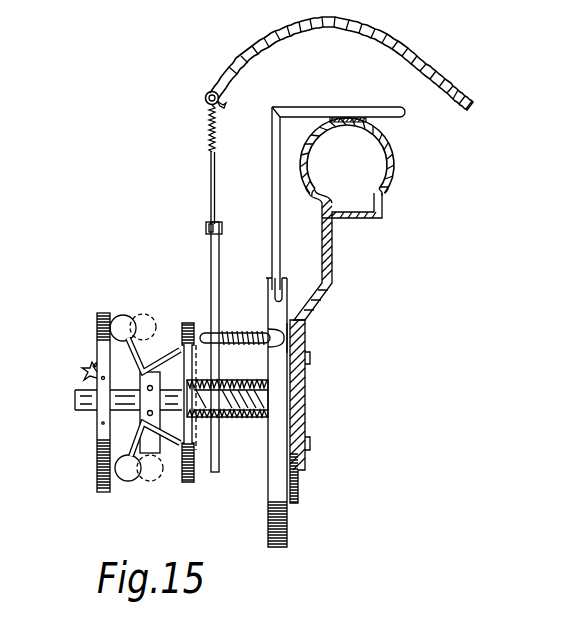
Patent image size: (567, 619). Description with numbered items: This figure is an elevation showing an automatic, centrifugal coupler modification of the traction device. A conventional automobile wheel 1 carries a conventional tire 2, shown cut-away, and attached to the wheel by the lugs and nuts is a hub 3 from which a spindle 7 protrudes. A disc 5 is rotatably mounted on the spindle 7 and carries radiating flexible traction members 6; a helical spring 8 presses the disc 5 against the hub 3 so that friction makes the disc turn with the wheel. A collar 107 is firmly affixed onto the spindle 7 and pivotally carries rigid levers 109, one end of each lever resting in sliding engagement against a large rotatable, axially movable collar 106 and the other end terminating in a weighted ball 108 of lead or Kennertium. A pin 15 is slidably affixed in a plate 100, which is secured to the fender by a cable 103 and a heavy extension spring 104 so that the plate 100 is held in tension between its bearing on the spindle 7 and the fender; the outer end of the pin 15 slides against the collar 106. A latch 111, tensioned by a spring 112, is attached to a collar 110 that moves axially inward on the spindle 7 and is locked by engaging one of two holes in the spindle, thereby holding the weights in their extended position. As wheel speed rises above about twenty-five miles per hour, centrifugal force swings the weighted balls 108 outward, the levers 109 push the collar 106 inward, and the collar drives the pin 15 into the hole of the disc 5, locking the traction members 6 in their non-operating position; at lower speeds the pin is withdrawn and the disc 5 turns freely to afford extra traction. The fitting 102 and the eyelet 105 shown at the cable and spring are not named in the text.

The automobile wheel 1 is at (335, 252).
The tire 2 is at (395, 160).
The hub 3 is at (298, 490).
The disc 5 is at (288, 527).
The flexible traction members 6 is at (315, 108).
The spindle 7 is at (75, 397).
The helical spring 8 is at (252, 418).
The pin 15 is at (257, 332).
The plate 100 is at (211, 262).
The fitting 102 is at (206, 228).
The cable 103 is at (211, 190).
The heavy extension spring 104 is at (211, 130).
The eyelet ring 105 is at (208, 98).
The collar 106 is at (186, 484).
The collar 107 is at (150, 416).
The weighted ball 108 is at (120, 316).
The levers 109 is at (176, 448).
The collar 110 is at (97, 445).
The latch 111 is at (82, 370).
The spring 112 is at (93, 362).